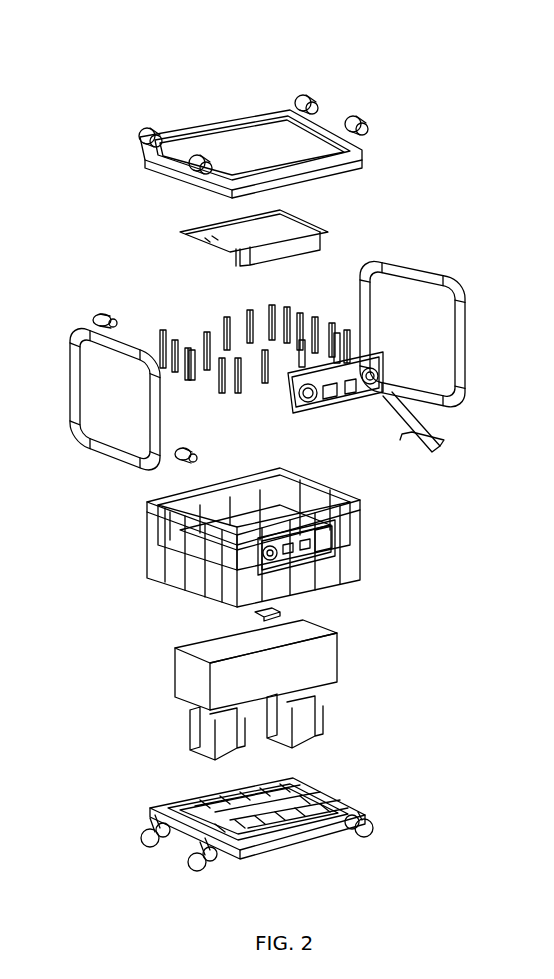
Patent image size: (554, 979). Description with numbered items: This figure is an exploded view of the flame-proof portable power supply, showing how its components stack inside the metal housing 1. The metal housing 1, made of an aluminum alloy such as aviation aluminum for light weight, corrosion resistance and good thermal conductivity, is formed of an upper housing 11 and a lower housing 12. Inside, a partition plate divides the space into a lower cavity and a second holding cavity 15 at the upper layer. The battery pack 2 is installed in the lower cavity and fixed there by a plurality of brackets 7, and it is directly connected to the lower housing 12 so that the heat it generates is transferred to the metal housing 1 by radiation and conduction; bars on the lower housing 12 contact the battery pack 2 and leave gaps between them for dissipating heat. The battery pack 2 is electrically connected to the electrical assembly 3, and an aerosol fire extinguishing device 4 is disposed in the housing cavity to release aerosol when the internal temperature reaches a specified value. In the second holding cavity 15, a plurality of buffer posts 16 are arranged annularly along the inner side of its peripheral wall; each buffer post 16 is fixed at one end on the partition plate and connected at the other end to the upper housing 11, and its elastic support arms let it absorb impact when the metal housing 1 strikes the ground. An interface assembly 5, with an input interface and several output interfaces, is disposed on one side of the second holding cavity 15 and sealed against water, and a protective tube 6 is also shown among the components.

The metal housing 1 is at (190, 552).
The battery pack 2 is at (322, 672).
The electrical assembly 3 is at (320, 228).
The aerosol fire extinguishing device 4 is at (262, 612).
The interface assembly 5 is at (345, 400).
The protective tube 6 is at (440, 262).
The bracket 7 is at (148, 140).
The upper housing 11 is at (247, 145).
The lower housing 12 is at (345, 805).
The second holding cavity 15 is at (330, 524).
The buffer post 16 is at (185, 330).